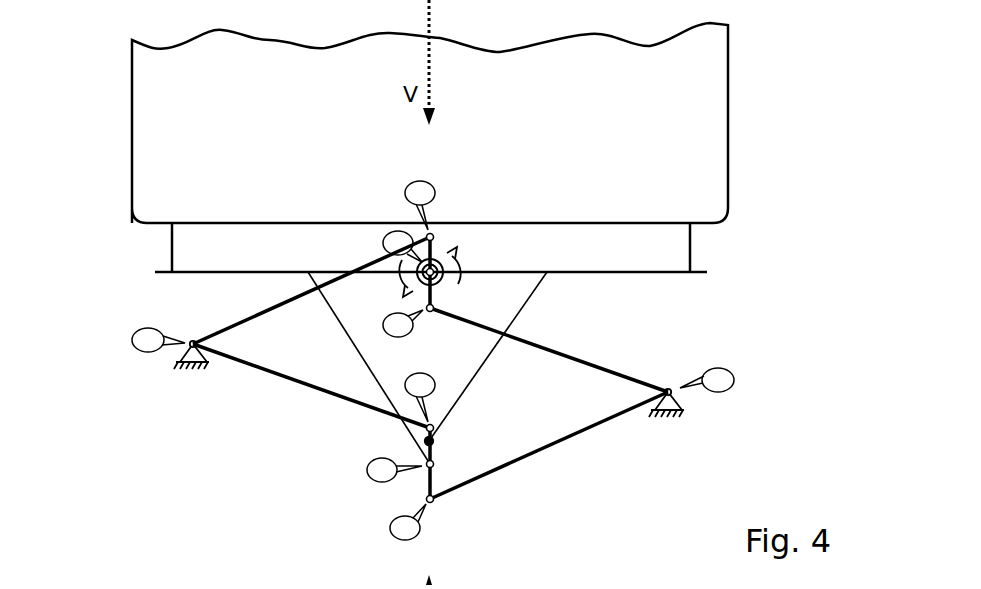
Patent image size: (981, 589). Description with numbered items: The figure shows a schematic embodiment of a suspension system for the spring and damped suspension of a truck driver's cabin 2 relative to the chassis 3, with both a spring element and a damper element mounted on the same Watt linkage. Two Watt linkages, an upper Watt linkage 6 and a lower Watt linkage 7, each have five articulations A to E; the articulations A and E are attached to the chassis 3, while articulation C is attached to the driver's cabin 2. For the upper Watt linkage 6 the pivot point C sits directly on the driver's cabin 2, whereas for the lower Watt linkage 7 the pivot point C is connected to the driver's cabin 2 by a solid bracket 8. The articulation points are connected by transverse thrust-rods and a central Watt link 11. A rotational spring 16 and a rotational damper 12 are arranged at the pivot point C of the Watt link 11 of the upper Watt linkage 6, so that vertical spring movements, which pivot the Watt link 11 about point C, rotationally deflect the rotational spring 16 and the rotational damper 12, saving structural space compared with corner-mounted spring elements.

The driver's cabin 2 is at (691, 101).
The chassis 3 is at (178, 382).
The upper Watt linkage 6 is at (297, 248).
The lower Watt linkage 7 is at (335, 497).
The bracket 8 is at (510, 300).
The Watt link 11 is at (436, 304).
The rotational damper 12 is at (466, 249).
The rotational spring 16 is at (444, 285).